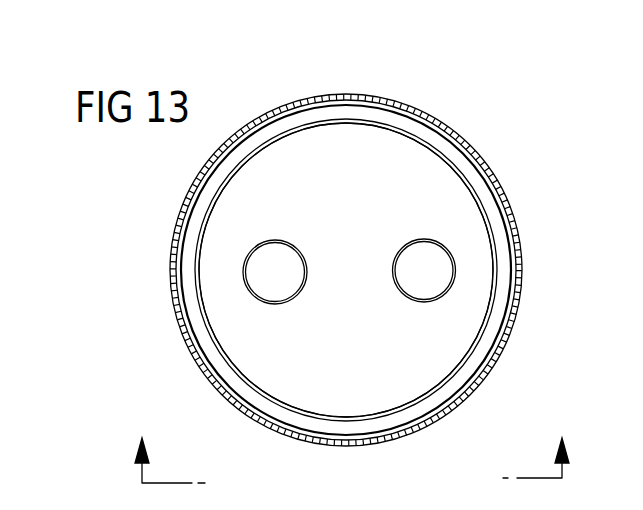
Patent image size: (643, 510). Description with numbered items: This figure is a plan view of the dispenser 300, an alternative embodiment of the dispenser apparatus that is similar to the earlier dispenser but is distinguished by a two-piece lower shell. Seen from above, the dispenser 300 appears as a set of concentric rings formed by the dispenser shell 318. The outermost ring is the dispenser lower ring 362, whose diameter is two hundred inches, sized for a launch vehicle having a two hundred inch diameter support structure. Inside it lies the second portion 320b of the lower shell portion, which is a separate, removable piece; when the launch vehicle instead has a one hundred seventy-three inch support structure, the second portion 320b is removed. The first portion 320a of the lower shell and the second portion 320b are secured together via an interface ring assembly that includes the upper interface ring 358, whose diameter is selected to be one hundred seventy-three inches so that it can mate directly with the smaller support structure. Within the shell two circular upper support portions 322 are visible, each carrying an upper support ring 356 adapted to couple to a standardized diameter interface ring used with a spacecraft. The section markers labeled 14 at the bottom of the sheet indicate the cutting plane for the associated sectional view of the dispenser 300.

The dispenser 300 is at (241, 77).
The dispenser lower ring 362 is at (223, 395).
The second portion 320b is at (207, 193).
The first portion 320a is at (448, 360).
The upper interface ring 358 is at (202, 232).
The dispenser shell 318 is at (220, 338).
The upper support portions 322 is at (243, 263).
The upper support rings 356 is at (288, 245).
The section line 14- 14 is at (351, 464).